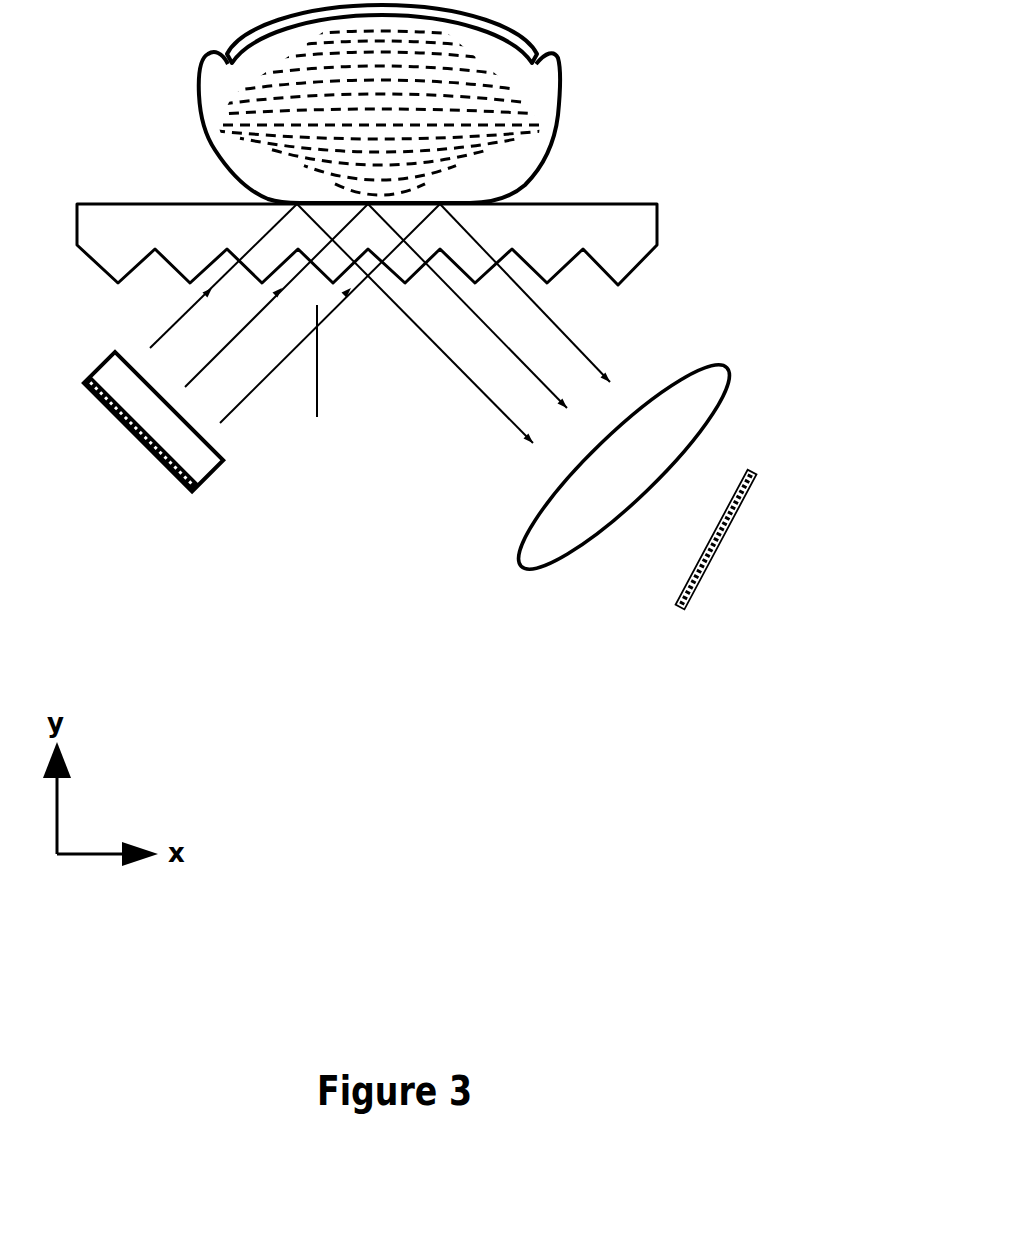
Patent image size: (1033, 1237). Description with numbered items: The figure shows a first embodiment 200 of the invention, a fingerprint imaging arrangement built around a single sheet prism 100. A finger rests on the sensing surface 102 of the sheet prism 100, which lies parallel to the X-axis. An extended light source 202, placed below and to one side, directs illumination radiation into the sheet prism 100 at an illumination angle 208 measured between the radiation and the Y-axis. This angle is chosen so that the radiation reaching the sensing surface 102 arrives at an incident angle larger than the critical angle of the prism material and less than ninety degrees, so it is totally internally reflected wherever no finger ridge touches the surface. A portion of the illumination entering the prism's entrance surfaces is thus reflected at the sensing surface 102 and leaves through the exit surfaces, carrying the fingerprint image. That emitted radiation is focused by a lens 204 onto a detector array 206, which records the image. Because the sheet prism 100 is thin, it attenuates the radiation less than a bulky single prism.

The sheet prism 100 is at (575, 208).
The sensing surface 102 is at (113, 202).
The first embodiment 200 is at (737, 243).
The extended light source 202 is at (127, 452).
The lens 204 is at (545, 547).
The detector array 206 is at (680, 585).
The illumination angle 208 is at (316, 368).